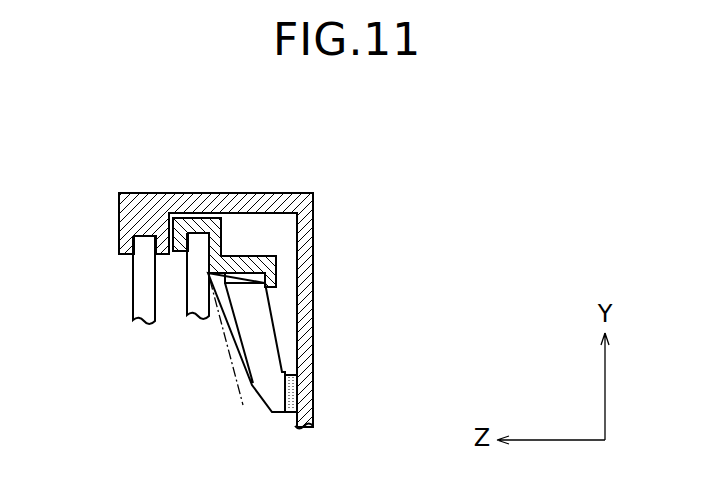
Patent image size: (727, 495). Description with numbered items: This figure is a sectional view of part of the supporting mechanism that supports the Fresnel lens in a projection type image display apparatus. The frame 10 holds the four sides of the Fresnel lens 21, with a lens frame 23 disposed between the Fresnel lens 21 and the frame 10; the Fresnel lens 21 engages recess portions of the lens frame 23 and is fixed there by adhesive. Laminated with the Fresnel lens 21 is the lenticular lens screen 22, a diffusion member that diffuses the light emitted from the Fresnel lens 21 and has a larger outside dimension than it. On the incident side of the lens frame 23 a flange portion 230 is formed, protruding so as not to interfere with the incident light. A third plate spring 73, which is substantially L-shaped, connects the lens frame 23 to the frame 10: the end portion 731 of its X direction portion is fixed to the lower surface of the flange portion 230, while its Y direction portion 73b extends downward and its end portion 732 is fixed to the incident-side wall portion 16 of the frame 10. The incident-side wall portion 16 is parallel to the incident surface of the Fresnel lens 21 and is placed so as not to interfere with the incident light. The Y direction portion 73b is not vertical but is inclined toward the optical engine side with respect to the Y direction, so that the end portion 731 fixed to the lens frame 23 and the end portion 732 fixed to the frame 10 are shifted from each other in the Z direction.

The frame 10 is at (278, 193).
The incident-side wall portion 16 is at (313, 248).
The Fresnel lens 21 is at (195, 302).
The lenticular lens screen 22 is at (140, 305).
The lens frame 23 is at (203, 219).
The flange portion 230 is at (263, 255).
The third plate spring 73 is at (303, 384).
The Y direction portion 73b is at (260, 345).
The end portion 731 is at (240, 282).
The end portion 732 is at (290, 395).